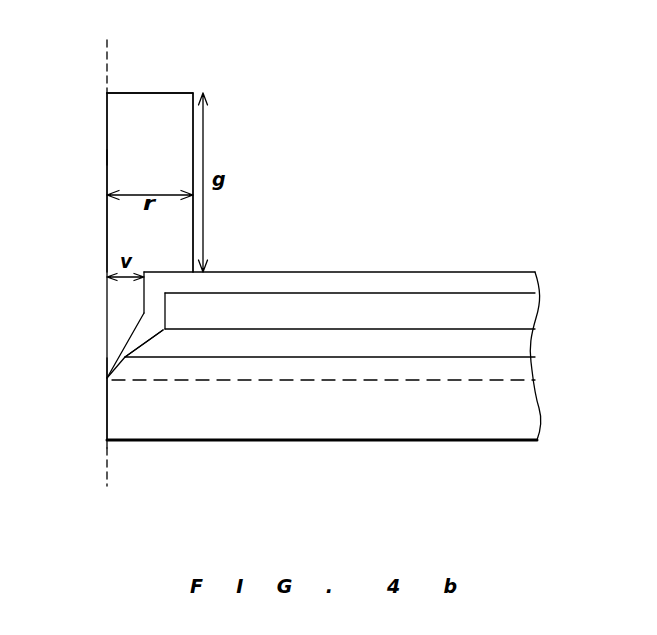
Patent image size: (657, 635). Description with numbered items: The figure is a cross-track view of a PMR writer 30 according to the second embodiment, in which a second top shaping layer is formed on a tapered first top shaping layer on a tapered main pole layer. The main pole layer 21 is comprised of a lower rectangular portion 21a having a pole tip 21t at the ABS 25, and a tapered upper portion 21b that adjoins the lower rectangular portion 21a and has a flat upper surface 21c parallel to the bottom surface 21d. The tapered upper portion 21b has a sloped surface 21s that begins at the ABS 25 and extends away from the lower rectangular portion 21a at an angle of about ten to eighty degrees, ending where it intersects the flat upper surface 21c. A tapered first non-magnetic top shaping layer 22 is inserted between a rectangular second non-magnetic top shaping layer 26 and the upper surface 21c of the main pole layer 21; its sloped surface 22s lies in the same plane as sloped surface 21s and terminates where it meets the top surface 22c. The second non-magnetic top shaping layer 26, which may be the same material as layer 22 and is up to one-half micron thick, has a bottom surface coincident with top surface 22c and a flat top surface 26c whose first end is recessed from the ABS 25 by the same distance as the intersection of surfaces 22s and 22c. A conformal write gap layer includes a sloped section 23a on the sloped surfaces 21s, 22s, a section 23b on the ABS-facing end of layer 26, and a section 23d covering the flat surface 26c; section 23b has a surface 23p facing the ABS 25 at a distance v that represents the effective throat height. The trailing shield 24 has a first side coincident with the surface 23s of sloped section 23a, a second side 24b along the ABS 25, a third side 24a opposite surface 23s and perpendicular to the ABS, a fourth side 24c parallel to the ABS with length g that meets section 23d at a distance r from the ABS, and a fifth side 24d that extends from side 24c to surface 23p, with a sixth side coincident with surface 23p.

The main pole layer 21 is at (545, 358).
The lower rectangular portion 21a is at (348, 423).
The tapered upper portion 21b is at (464, 370).
The flat upper surface 21c is at (290, 358).
The bottom surface 21d is at (408, 440).
The sloped surface 21s is at (125, 358).
The pole tip 21t is at (107, 413).
The tapered first non-magnetic top shaping layer 22 is at (524, 341).
The top surface 22c is at (327, 330).
The sloped surface 22s is at (155, 333).
The sloped section 23a is at (118, 354).
The section 23b is at (158, 298).
The section 23d is at (498, 282).
The surface 23p is at (145, 313).
The surface 23s is at (120, 334).
The trailing shield 24 is at (163, 108).
The third side 24a is at (143, 93).
The second side 24b is at (107, 121).
The fourth side 24c is at (193, 152).
The fifth side 24d is at (173, 270).
The ABS 25 is at (112, 482).
The second non-magnetic top shaping layer 26 is at (520, 310).
The flat top surface 26c is at (273, 292).
The PMR writer 30 is at (396, 120).